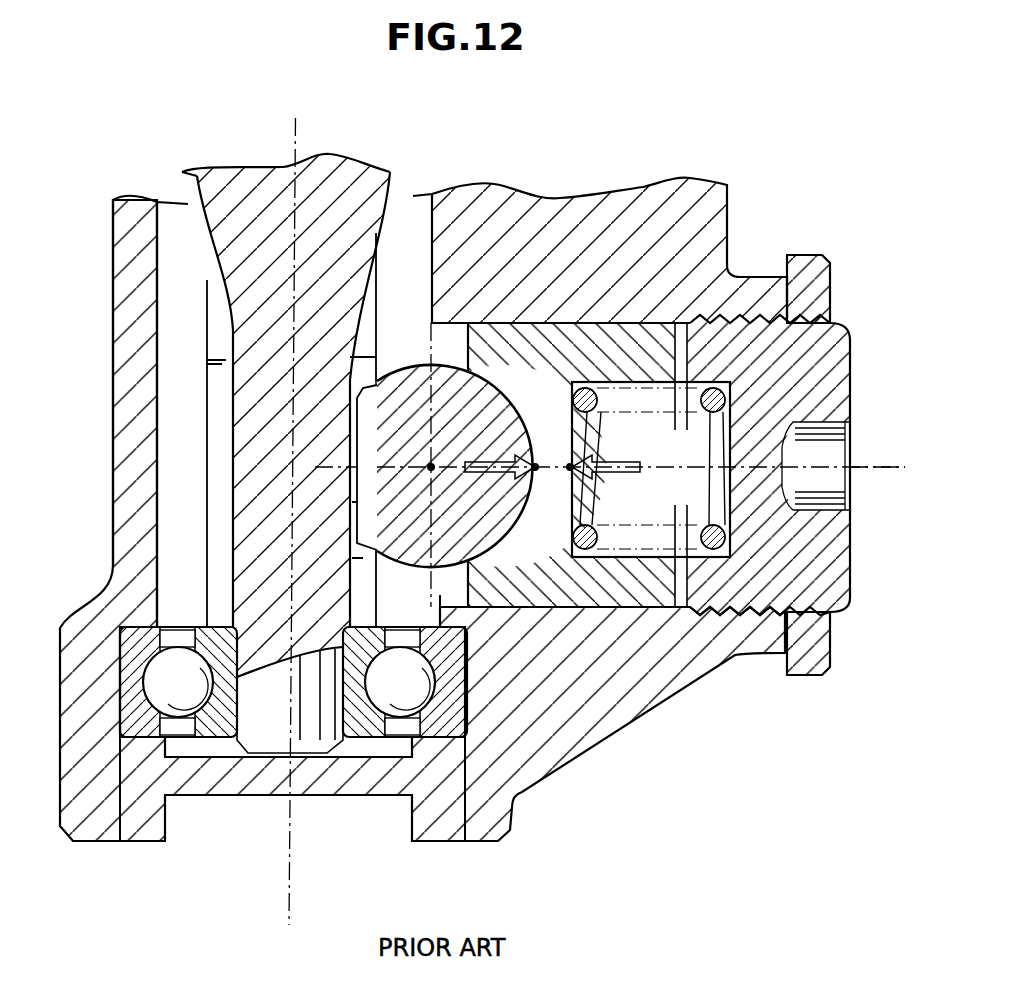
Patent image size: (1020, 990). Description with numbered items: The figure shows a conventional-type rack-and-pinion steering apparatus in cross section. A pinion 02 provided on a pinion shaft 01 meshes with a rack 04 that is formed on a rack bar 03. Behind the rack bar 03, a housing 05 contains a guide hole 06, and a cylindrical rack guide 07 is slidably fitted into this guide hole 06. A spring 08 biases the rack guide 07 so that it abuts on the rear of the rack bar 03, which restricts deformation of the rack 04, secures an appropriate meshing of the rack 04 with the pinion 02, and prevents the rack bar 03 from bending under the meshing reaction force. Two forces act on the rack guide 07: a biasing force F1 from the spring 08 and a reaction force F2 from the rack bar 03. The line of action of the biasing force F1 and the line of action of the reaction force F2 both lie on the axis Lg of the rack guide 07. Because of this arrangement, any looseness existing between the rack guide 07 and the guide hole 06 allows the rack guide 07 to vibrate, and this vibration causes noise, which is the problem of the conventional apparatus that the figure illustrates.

The pinion shaft 01 is at (350, 168).
The pinion 02 is at (150, 411).
The rack bar 03 is at (410, 372).
The rack 04 is at (353, 497).
The housing 05 is at (707, 210).
The guide hole 06 is at (560, 333).
The rack guide 07 is at (612, 605).
The spring 08 is at (600, 537).
The biasing force F1 is at (623, 460).
The reaction force F2 is at (478, 461).
The axis of the rack guide Lg is at (867, 460).